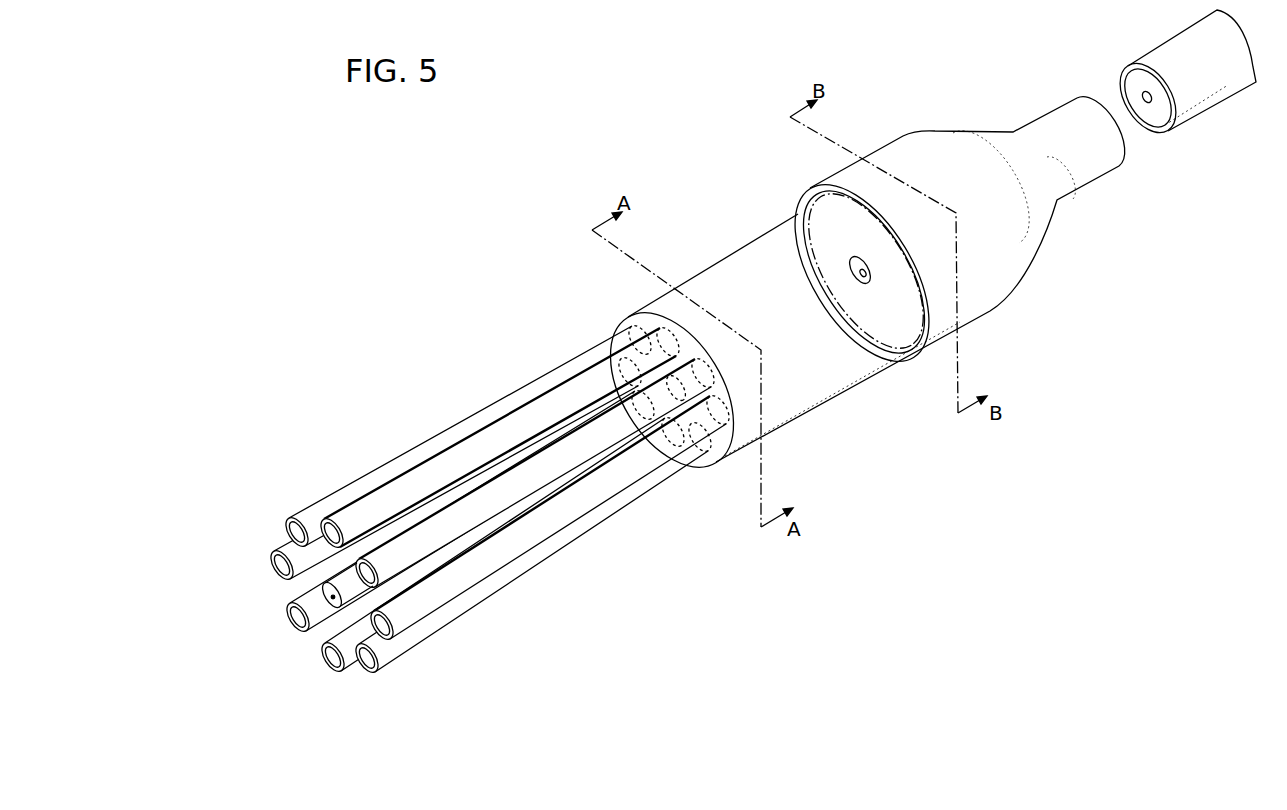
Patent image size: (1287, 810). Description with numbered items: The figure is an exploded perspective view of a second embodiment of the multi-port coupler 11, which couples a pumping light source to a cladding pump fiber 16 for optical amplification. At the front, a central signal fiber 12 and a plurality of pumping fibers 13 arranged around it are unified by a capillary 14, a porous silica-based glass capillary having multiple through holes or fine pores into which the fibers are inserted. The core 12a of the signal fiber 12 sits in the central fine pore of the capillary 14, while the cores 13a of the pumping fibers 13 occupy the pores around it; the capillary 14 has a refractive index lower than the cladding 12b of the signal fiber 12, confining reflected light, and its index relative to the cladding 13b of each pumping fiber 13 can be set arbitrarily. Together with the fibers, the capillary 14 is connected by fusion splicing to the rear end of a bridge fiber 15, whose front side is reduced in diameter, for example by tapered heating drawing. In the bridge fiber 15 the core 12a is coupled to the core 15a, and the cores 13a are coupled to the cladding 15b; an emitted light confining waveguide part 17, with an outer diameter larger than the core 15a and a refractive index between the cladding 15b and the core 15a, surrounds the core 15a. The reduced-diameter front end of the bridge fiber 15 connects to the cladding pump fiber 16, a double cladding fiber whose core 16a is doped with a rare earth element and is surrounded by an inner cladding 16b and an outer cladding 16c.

The multi-port coupler 11 is at (876, 312).
The central signal fiber 12 is at (329, 684).
The core of the signal fiber 12a is at (333, 600).
The cladding of the signal fiber 12b is at (338, 606).
The pumping fibers 13 is at (491, 563).
The cores of the pumping fibers 13a is at (338, 436).
The cladding of the pumping fiber 13b is at (292, 522).
The capillary 14 is at (778, 397).
The bridge fiber 15 is at (946, 284).
The core of the bridge fiber 15a is at (847, 285).
The cladding of the bridge fiber 15b is at (915, 298).
The cladding pump fiber 16 is at (1185, 121).
The core of the cladding pump fiber 16a is at (1143, 102).
The inner cladding 16b is at (1146, 118).
The outer cladding 16c is at (1167, 135).
The emitted light confining waveguide part 17 is at (866, 280).